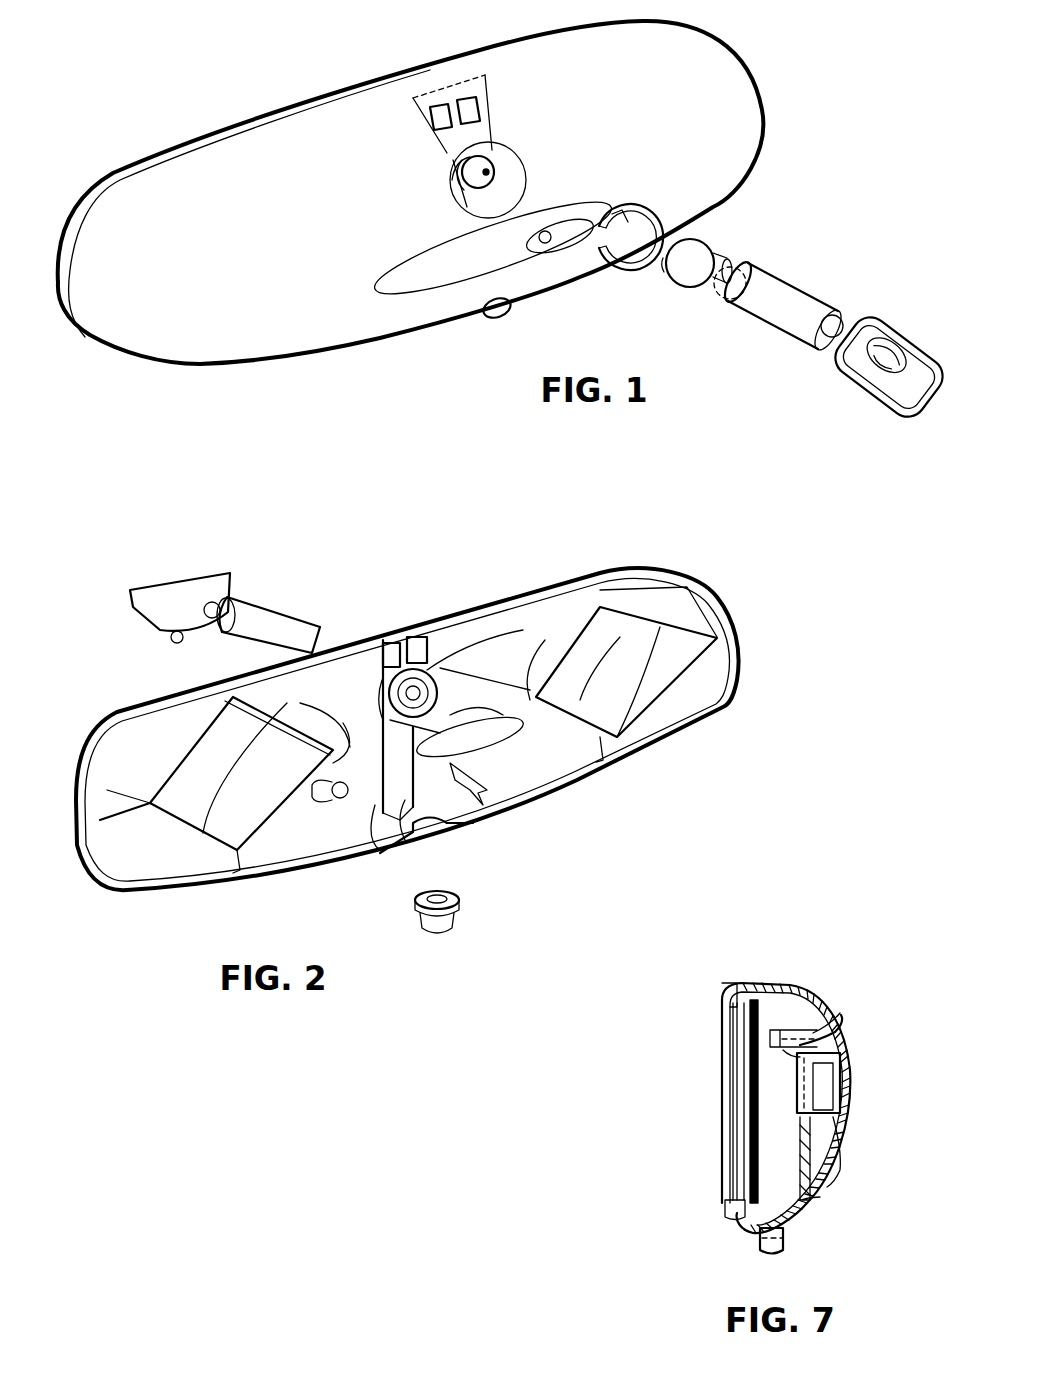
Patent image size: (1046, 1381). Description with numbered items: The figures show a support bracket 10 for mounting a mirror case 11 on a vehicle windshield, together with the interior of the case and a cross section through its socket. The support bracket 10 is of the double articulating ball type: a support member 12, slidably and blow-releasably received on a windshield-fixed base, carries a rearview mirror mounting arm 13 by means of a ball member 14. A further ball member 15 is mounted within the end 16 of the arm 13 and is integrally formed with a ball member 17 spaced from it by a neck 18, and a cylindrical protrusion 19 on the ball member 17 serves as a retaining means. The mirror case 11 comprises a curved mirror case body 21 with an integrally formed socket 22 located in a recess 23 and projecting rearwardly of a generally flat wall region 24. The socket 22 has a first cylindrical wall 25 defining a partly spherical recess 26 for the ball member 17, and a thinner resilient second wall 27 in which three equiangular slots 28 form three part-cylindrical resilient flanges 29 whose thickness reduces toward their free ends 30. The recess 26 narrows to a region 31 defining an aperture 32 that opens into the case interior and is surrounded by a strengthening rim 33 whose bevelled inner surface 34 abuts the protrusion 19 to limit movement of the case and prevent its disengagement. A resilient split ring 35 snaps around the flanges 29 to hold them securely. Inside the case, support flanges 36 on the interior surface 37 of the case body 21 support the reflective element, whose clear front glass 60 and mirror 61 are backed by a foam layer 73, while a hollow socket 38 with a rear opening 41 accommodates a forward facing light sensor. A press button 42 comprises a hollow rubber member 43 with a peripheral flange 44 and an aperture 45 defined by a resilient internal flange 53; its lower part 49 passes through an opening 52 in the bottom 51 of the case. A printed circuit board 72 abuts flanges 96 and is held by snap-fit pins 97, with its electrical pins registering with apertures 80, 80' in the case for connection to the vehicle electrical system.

In FIG. 1, the support bracket 10 is at (876, 268).
In FIG. 1, the mirror case 11 is at (713, 75).
In FIG. 1, the support member 12 is at (893, 396).
In FIG. 2, the support member 12 is at (198, 595).
In FIG. 1, the rearview mirror mounting arm 13 is at (793, 293).
In FIG. 2, the rearview mirror mounting arm 13 is at (245, 622).
In FIG. 1, the ball member 14 is at (822, 340).
In FIG. 1, the ball member 15 is at (748, 300).
In FIG. 1, the end of the arm 16 is at (743, 260).
In FIG. 1, the ball member 17 is at (688, 265).
In FIG. 2, the ball member 17 is at (413, 640).
In FIG. 1, the neck 18 is at (710, 280).
In FIG. 1, the cylindrical protrusion 19 is at (665, 266).
In FIG. 2, the cylindrical protrusion 19 is at (440, 625).
In FIG. 1, the mirror case body 21 is at (243, 160).
In FIG. 2, the mirror case body 21 is at (625, 580).
In FIG. 1, the socket 22 is at (515, 157).
In FIG. 1, the recess 23 is at (487, 100).
In FIG. 1, the flat wall region 24 is at (456, 90).
In FIG. 1, the first cylindrical wall 25 is at (440, 108).
In FIG. 7, the first cylindrical wall 25 is at (835, 1045).
In FIG. 7, the partly spherical recess 26 is at (818, 1085).
In FIG. 1, the second wall 27 is at (483, 200).
In FIG. 7, the second wall 27 is at (838, 1165).
In FIG. 1, the slots 28 is at (492, 172).
In FIG. 1, the resilient flanges 29 is at (480, 153).
In FIG. 7, the resilient flanges 29 is at (840, 1055).
In FIG. 7, the free ends 30 is at (840, 1075).
In FIG. 7, the region 31 is at (770, 1015).
In FIG. 7, the aperture 32 is at (800, 1080).
In FIG. 2, the strengthening rim 33 is at (345, 700).
In FIG. 7, the strengthening rim 33 is at (797, 1105).
In FIG. 2, the inner surface 34 is at (440, 668).
In FIG. 7, the inner surface 34 is at (797, 1080).
In FIG. 1, the resilient split ring 35 is at (618, 215).
In FIG. 2, the support flanges 36 is at (150, 770).
In FIG. 2, the interior surface 37 is at (128, 878).
In FIG. 2, the hollow socket 38 is at (343, 800).
In FIG. 1, the opening 41 is at (546, 243).
In FIG. 1, the press button 42 is at (500, 317).
In FIG. 2, the press button 42 is at (468, 918).
In FIG. 2, the hollow rubber member 43 is at (450, 925).
In FIG. 7, the hollow rubber member 43 is at (785, 1242).
In FIG. 2, the peripheral flange 44 is at (425, 920).
In FIG. 2, the aperture 45 is at (420, 896).
In FIG. 2, the lower part 49 is at (433, 935).
In FIG. 2, the bottom 51 is at (520, 792).
In FIG. 2, the opening 52 is at (430, 833).
In FIG. 2, the resilient internal flange 53 is at (450, 893).
In FIG. 7, the clear front glass 60 is at (725, 1020).
In FIG. 7, the mirror 61 is at (740, 1175).
In FIG. 7, the printed circuit board 72 is at (765, 992).
In FIG. 7, the foam layer 73 is at (742, 1098).
In FIG. 1, the aperture 80 is at (415, 82).
In FIG. 2, the aperture 80 is at (432, 611).
In FIG. 1, the aperture 80' is at (482, 63).
In FIG. 2, the aperture 80' is at (382, 616).
In FIG. 2, the flanges 96 is at (355, 703).
In FIG. 2, the pins 97 is at (382, 680).